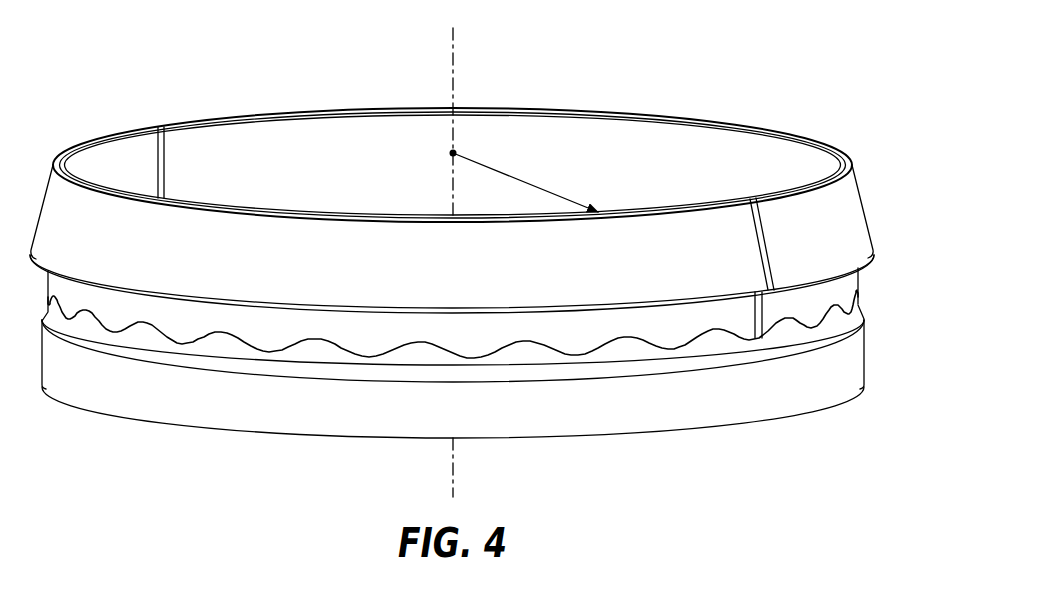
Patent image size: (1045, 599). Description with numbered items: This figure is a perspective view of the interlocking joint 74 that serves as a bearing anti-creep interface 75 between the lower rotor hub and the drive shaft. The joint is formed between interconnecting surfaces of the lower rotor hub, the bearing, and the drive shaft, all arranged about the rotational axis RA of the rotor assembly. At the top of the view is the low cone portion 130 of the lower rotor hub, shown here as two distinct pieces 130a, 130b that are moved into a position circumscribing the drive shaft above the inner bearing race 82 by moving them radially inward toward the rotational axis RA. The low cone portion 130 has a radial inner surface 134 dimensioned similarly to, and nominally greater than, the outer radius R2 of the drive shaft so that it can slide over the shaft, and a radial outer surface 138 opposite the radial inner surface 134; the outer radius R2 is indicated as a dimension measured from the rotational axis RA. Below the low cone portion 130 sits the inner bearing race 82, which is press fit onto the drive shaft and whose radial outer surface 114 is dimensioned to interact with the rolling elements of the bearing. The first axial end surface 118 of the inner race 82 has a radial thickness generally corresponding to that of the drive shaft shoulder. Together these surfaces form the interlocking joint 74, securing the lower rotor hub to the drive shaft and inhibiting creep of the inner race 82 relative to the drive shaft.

The low cone portion 130 is at (484, 173).
The piece of low cone portion 130a is at (818, 163).
The piece of low cone portion 130b is at (130, 125).
The radial inner surface 134 is at (772, 187).
The radial outer surface 138 is at (865, 273).
The interlocking joint 74 is at (498, 324).
The bearing anti-creep interface 75 is at (863, 297).
The inner bearing race 82 is at (848, 348).
The radial outer surface 114 is at (485, 407).
The first axial end surface 118 is at (733, 428).
The rotational axis RA is at (453, 88).
The outer radius R2 is at (517, 176).